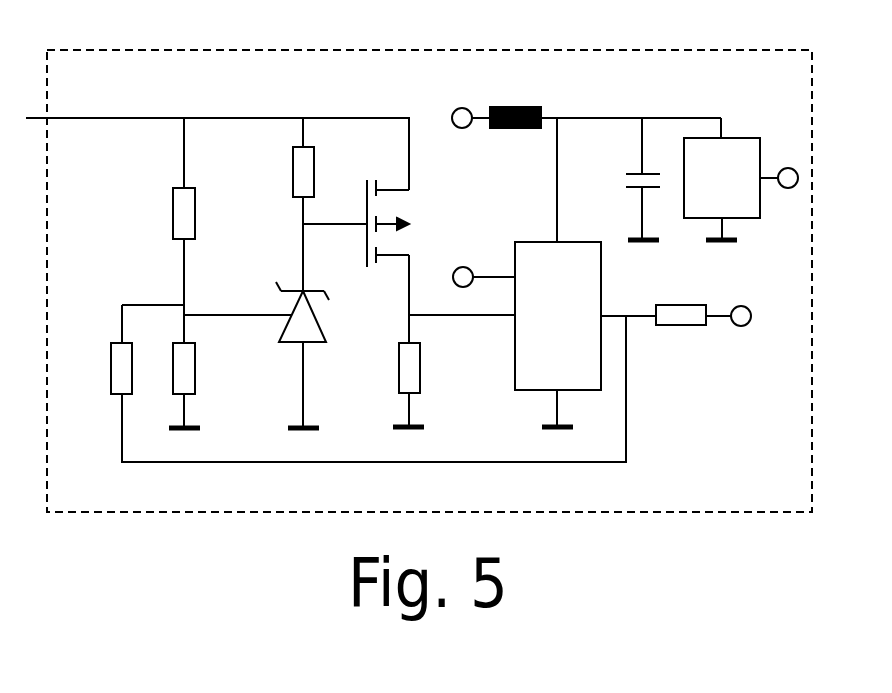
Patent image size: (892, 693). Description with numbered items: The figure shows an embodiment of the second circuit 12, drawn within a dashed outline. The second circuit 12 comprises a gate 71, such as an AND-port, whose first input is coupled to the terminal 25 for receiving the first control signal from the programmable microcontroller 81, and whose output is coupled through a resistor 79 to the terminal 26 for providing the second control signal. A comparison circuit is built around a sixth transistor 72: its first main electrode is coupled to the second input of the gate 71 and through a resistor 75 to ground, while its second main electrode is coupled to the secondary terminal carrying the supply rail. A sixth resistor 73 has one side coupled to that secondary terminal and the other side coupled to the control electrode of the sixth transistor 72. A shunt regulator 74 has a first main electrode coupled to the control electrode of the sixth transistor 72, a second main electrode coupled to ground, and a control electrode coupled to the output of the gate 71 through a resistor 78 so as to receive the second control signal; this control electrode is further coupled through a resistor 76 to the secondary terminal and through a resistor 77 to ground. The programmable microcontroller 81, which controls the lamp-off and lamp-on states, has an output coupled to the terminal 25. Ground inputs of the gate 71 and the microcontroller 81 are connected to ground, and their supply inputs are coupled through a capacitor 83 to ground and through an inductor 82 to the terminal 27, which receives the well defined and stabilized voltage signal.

The second circuit 12 is at (772, 512).
The terminal 25 is at (625, 227).
The terminal 26 is at (758, 316).
The terminal 27 is at (466, 137).
The gate 71 is at (574, 276).
The sixth transistor 72 is at (356, 230).
The sixth resistor 73 is at (284, 204).
The shunt regulator 74 is at (286, 346).
The resistor 75 is at (391, 385).
The resistor 76 is at (165, 230).
The resistor 77 is at (198, 385).
The resistor 78 is at (101, 349).
The resistor 79 is at (693, 335).
The programmable microcontroller 81 is at (724, 168).
The inductor 82 is at (605, 96).
The capacitor 83 is at (626, 179).